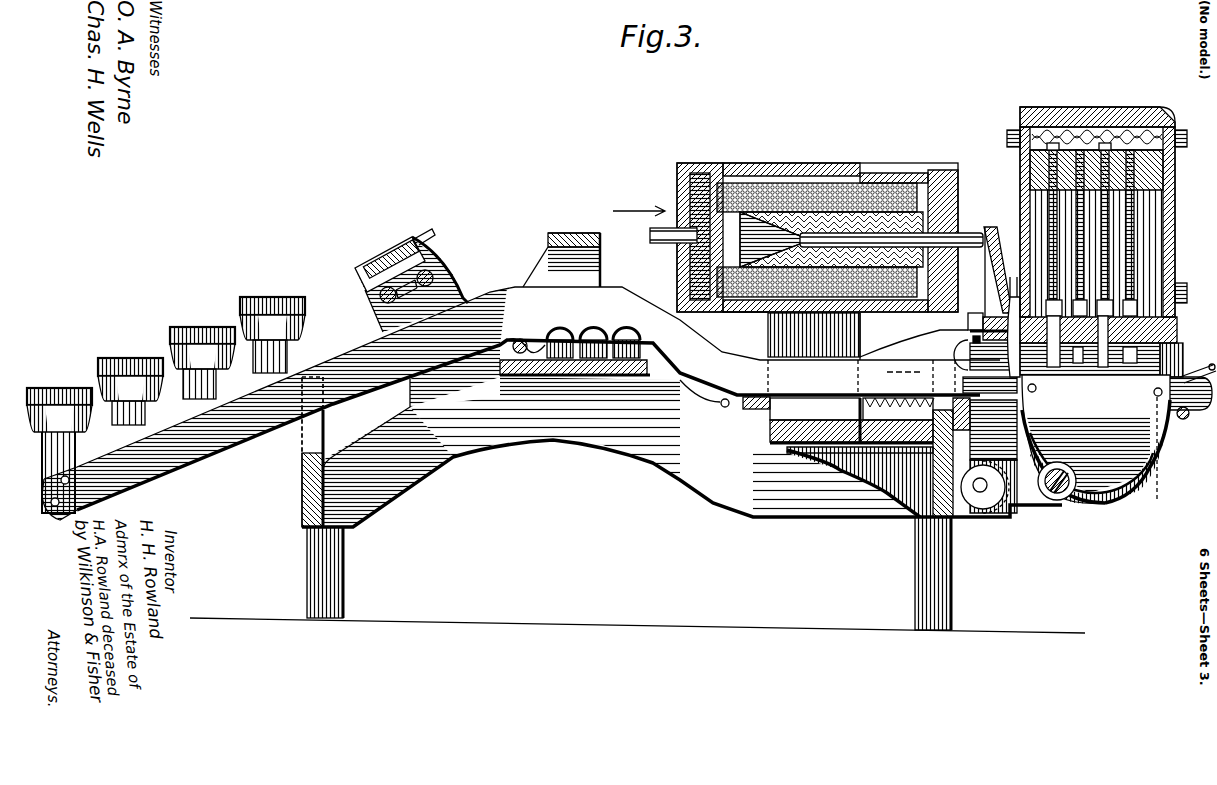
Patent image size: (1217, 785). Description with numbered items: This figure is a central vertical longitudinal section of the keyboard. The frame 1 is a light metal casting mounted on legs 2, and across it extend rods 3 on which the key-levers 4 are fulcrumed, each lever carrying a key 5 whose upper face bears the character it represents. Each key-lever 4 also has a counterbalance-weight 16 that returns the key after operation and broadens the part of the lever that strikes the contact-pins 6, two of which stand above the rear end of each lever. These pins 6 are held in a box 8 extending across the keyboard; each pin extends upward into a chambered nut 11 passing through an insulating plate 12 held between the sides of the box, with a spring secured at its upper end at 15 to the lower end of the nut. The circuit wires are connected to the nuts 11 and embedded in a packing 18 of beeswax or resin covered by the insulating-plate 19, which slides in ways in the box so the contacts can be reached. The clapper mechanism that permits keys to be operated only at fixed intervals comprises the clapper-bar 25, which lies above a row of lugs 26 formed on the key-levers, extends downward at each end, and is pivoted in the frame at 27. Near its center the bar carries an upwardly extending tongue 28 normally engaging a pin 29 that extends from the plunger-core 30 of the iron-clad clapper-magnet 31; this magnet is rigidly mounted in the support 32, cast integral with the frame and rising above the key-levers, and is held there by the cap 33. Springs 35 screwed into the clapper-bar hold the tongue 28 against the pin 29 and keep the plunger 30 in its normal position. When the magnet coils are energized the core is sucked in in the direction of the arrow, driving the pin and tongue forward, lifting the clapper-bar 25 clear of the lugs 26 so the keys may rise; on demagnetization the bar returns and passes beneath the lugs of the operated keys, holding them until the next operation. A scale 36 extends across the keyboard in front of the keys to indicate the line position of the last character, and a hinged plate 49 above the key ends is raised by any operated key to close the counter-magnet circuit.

The frame 1 is at (682, 436).
The legs 2 is at (345, 580).
The rods 3 is at (526, 340).
The key-levers 4 is at (521, 403).
The key 5 is at (90, 430).
The contact-pins 6 is at (1100, 363).
The box 8 is at (1148, 272).
The chambered nut 11 is at (1133, 107).
The insulating plate 12 is at (1175, 180).
The spring securing point 15 is at (1020, 193).
The counterbalance-weight 16 is at (1162, 428).
The packing 18 is at (1060, 127).
The insulating-plate 19 is at (1100, 127).
The clapper-bar 25 is at (966, 328).
The lugs 26 is at (966, 340).
The pivot 27 is at (985, 490).
The tongue 28 is at (993, 227).
The pin 29 is at (971, 235).
The plunger-core 30 is at (748, 212).
The clapper-magnet 31 is at (885, 175).
The support 32 is at (780, 343).
The cap 33 is at (815, 178).
The springs 35 is at (748, 410).
The scale 36 is at (385, 262).
The hinged plate 49 is at (1195, 365).